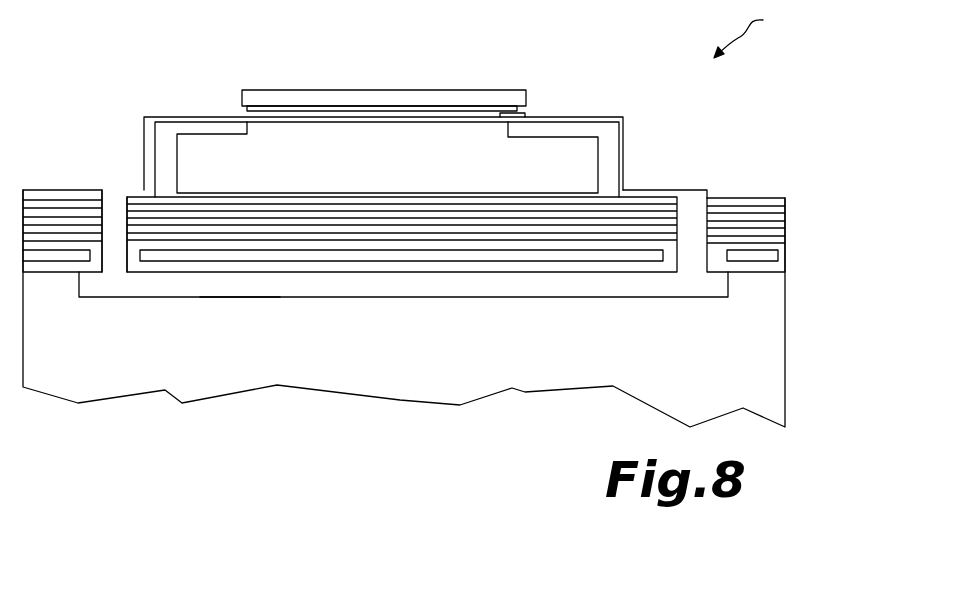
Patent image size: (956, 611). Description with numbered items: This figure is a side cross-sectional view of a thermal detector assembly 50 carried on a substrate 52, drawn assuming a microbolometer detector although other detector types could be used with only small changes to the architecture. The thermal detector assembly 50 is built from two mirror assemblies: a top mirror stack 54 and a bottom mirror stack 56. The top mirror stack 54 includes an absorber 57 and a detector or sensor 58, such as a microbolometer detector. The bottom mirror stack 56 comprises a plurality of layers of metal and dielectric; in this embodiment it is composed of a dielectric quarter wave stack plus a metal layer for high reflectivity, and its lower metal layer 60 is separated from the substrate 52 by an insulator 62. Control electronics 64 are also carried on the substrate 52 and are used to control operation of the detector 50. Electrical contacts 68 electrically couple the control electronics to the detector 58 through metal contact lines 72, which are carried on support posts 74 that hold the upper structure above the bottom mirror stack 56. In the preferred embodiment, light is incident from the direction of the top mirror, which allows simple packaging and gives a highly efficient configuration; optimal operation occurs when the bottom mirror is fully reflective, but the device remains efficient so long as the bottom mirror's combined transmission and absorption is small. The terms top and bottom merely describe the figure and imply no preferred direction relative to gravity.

The thermal detector assembly 50 is at (755, 31).
The substrate 52 is at (760, 342).
The top mirror stack 54 is at (413, 90).
The bottom mirror stack 56 is at (730, 227).
The absorber 57 is at (500, 121).
The detector 58 is at (458, 106).
The lower metal layer 60 is at (783, 258).
The insulator 62 is at (767, 273).
The control electronics 64 is at (238, 297).
The electrical contacts 68 is at (110, 210).
The metal contact lines 72 is at (181, 120).
The support posts 74 is at (180, 163).